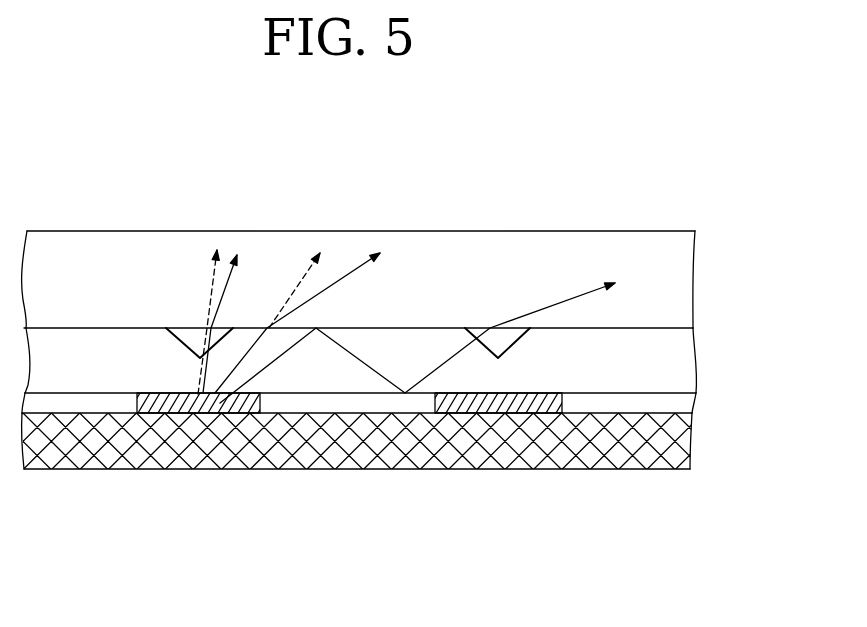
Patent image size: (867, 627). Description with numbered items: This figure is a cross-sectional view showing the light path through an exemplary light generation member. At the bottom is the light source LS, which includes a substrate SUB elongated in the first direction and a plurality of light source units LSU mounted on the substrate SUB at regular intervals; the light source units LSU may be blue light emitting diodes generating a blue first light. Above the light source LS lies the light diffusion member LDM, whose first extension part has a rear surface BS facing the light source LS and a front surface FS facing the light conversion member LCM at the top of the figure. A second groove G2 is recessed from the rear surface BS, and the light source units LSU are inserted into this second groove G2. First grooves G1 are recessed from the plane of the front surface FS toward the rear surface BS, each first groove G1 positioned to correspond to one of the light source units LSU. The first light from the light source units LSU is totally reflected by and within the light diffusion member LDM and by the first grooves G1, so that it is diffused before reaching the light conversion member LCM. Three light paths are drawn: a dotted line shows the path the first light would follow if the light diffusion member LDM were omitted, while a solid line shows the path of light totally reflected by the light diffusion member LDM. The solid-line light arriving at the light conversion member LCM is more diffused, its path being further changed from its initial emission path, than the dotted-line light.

The light conversion member LCM is at (680, 262).
The front surface FS is at (668, 327).
The light diffusion member LDM is at (687, 347).
The first groove G1 is at (199, 327).
The second groove G2 is at (674, 399).
The light source unit LSU is at (184, 407).
The substrate SUB is at (101, 457).
The rear surface BS is at (605, 420).
The light source LS is at (208, 543).